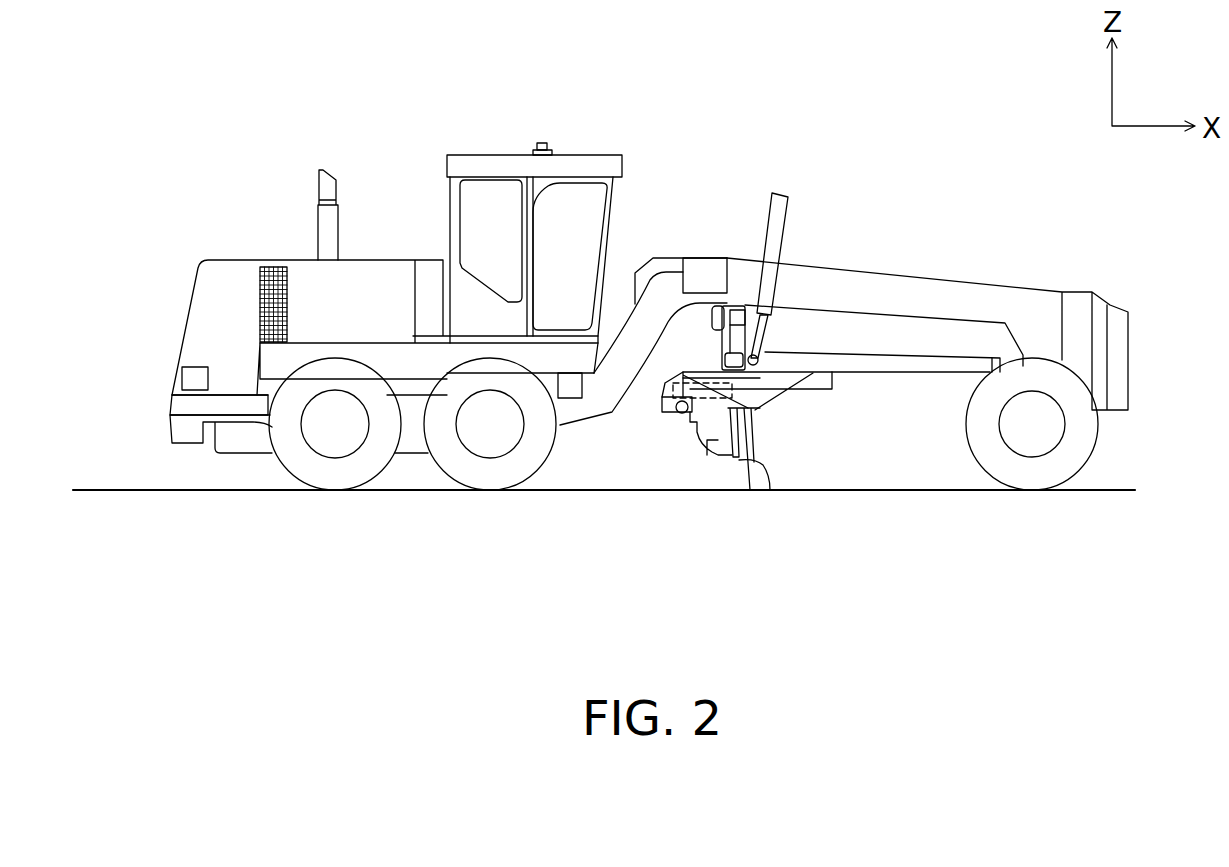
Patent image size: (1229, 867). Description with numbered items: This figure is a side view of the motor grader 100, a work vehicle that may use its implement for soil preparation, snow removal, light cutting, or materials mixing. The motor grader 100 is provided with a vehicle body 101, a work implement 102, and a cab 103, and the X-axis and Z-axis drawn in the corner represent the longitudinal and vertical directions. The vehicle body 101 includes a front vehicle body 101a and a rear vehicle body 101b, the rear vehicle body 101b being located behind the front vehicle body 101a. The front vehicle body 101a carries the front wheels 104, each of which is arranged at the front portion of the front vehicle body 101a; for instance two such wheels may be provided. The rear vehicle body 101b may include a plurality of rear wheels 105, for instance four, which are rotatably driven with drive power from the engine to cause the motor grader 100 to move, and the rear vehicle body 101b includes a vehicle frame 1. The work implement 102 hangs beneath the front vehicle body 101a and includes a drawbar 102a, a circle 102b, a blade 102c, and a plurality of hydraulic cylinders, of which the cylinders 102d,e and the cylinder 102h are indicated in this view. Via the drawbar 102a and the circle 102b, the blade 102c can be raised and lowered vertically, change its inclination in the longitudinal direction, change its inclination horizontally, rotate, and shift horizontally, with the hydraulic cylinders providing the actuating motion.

The vehicle frame 1 is at (238, 408).
The motor grader 100 is at (901, 137).
The vehicle body 101 is at (677, 225).
The front vehicle body 101a is at (913, 273).
The rear vehicle body 101b is at (388, 221).
The work implement 102 is at (812, 472).
The drawbar 102a is at (930, 372).
The circle 102b is at (820, 386).
The blade 102c is at (772, 470).
The hydraulic cylinders 102d,e is at (775, 212).
The hydraulic cylinder 102h is at (700, 445).
The cab 103 is at (478, 160).
The front wheels 104 is at (1037, 478).
The rear wheels 105 is at (340, 478).